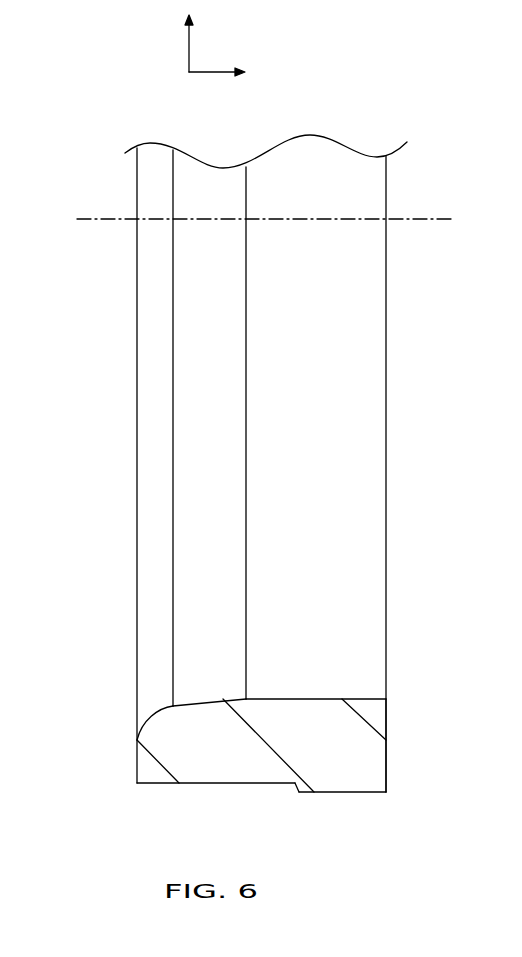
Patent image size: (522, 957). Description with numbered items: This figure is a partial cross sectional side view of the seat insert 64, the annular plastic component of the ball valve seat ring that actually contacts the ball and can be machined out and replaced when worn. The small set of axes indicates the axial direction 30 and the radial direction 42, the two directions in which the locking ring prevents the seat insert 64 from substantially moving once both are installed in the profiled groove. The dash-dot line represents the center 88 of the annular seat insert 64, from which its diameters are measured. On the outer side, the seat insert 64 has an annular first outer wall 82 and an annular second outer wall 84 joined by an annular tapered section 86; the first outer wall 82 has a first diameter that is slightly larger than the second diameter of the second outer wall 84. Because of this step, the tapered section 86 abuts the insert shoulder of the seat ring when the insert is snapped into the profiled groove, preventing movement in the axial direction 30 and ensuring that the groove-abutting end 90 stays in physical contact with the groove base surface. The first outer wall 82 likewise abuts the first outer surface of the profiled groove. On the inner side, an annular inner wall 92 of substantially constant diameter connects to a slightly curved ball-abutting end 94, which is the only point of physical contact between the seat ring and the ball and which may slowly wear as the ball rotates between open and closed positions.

The seat insert 64 is at (352, 87).
The center 88 is at (97, 217).
The radial direction 42 is at (188, 50).
The axial direction 30 is at (210, 73).
The inner wall 92 is at (317, 698).
The ball-abutting end 94 is at (155, 712).
The second outer wall 84 is at (160, 783).
The tapered section 86 is at (295, 787).
The first outer wall 82 is at (342, 793).
The groove-abutting end 90 is at (387, 753).